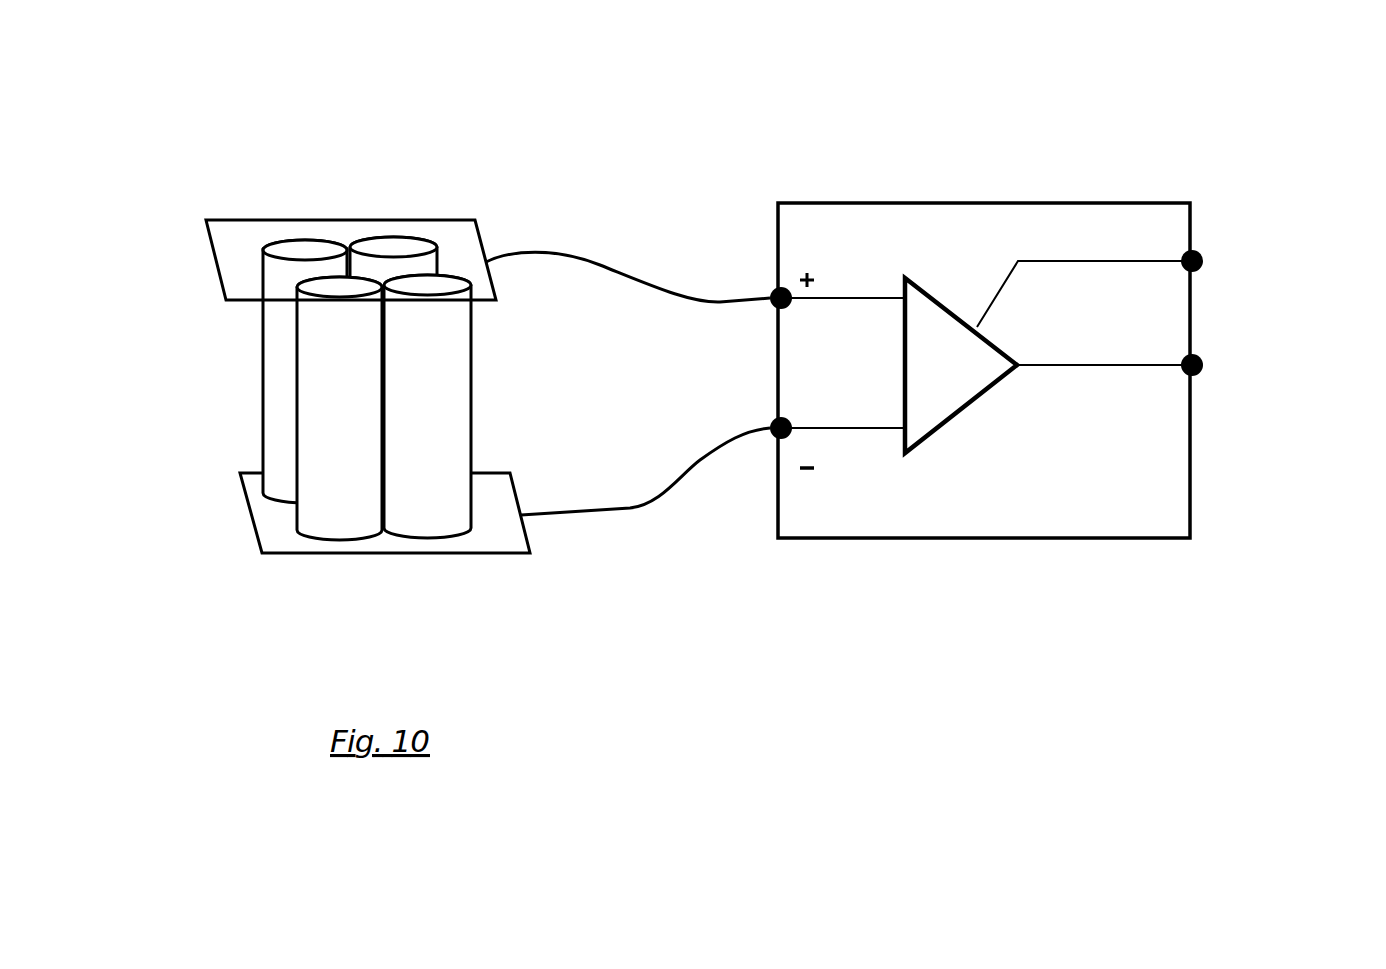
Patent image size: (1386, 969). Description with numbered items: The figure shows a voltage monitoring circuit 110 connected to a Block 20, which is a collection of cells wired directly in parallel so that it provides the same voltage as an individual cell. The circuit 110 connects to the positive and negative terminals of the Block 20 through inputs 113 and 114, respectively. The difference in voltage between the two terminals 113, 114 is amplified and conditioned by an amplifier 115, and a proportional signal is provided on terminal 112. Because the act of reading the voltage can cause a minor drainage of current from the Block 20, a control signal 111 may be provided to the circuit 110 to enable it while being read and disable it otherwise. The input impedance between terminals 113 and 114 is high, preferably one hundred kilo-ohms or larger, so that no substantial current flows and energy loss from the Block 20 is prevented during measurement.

The Block 20 is at (268, 212).
The voltage monitoring circuit 110 is at (920, 70).
The control signal 111 is at (1217, 242).
The terminal 112 is at (1217, 347).
The input 113 is at (755, 284).
The input 114 is at (760, 453).
The amplifier 115 is at (982, 417).